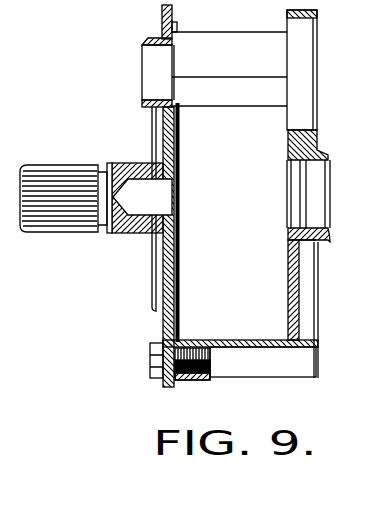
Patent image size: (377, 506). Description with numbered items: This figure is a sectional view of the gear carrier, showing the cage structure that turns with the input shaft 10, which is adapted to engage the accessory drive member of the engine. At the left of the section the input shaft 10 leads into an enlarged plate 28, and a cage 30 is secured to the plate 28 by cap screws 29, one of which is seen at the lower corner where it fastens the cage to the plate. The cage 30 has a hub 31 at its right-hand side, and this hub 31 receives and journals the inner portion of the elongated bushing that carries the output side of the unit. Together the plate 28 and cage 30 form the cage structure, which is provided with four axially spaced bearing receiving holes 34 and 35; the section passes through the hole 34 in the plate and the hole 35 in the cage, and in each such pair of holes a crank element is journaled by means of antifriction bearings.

The input shaft 10 is at (82, 154).
The enlarged plate 28 is at (165, 323).
The cap screws 29 is at (150, 365).
The cage 30 is at (303, 358).
The hub 31 is at (325, 237).
The bearing receiving hole 34 is at (148, 70).
The bearing receiving hole 35 is at (303, 68).